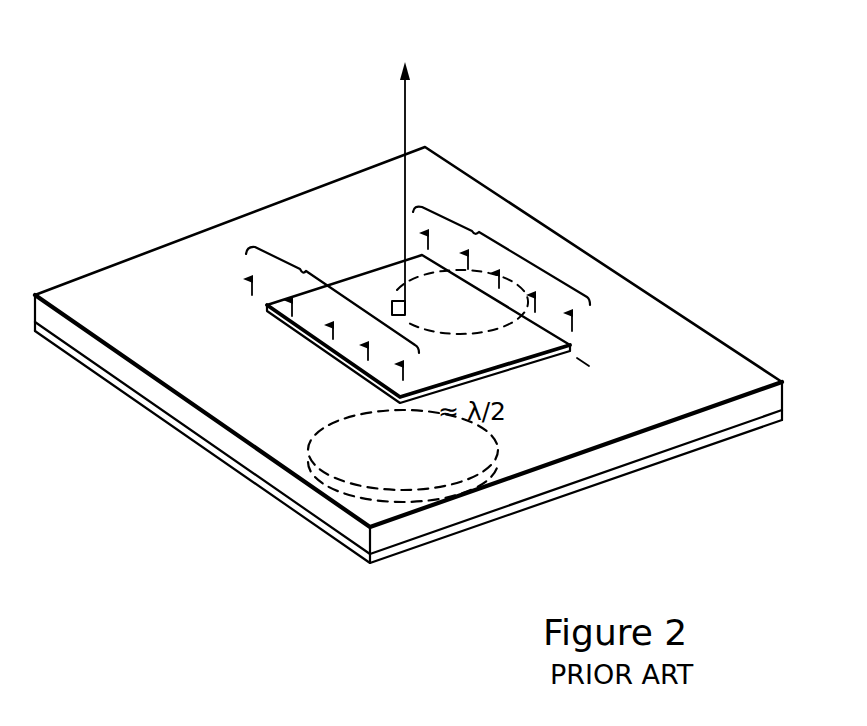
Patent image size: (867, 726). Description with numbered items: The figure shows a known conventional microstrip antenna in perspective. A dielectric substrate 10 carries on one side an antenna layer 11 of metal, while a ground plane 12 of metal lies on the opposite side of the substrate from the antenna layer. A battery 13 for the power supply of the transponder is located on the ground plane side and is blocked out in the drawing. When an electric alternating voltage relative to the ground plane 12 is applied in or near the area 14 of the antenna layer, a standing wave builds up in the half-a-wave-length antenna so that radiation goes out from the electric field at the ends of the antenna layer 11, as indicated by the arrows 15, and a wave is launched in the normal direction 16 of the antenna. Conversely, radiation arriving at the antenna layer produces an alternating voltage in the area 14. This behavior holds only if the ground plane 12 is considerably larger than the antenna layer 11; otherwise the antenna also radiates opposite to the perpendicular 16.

The dielectric substrate 10 is at (122, 370).
The antenna layer 11 is at (323, 323).
The ground plane 12 is at (227, 462).
The battery 13 is at (363, 458).
The area of the antenna layer 14 is at (455, 303).
The arrows 15 is at (478, 230).
The normal direction 16 is at (412, 165).